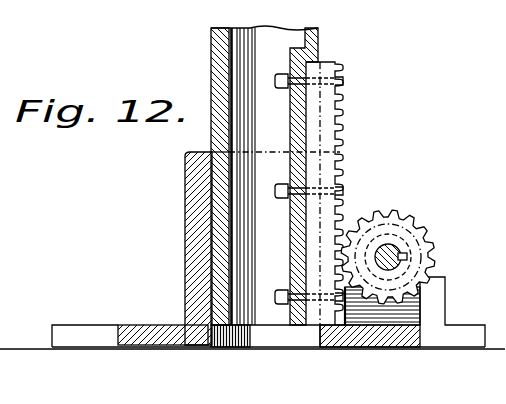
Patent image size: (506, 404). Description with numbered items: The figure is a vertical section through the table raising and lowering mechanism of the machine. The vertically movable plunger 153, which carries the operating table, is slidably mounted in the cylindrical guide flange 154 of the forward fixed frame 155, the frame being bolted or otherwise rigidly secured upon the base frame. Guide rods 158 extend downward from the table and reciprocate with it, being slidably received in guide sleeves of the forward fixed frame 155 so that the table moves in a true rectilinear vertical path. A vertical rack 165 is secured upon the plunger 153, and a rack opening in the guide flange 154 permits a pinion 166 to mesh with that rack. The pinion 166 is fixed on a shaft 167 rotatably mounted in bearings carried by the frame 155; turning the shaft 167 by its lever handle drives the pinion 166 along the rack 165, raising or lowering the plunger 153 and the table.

The plunger 153 is at (318, 43).
The cylindrical guide flange 154 is at (200, 228).
The forward fixed frame 155 is at (148, 325).
The guide rods 158 is at (215, 260).
The vertical rack 165 is at (333, 118).
The pinion 166 is at (417, 197).
The shaft 167 is at (403, 254).